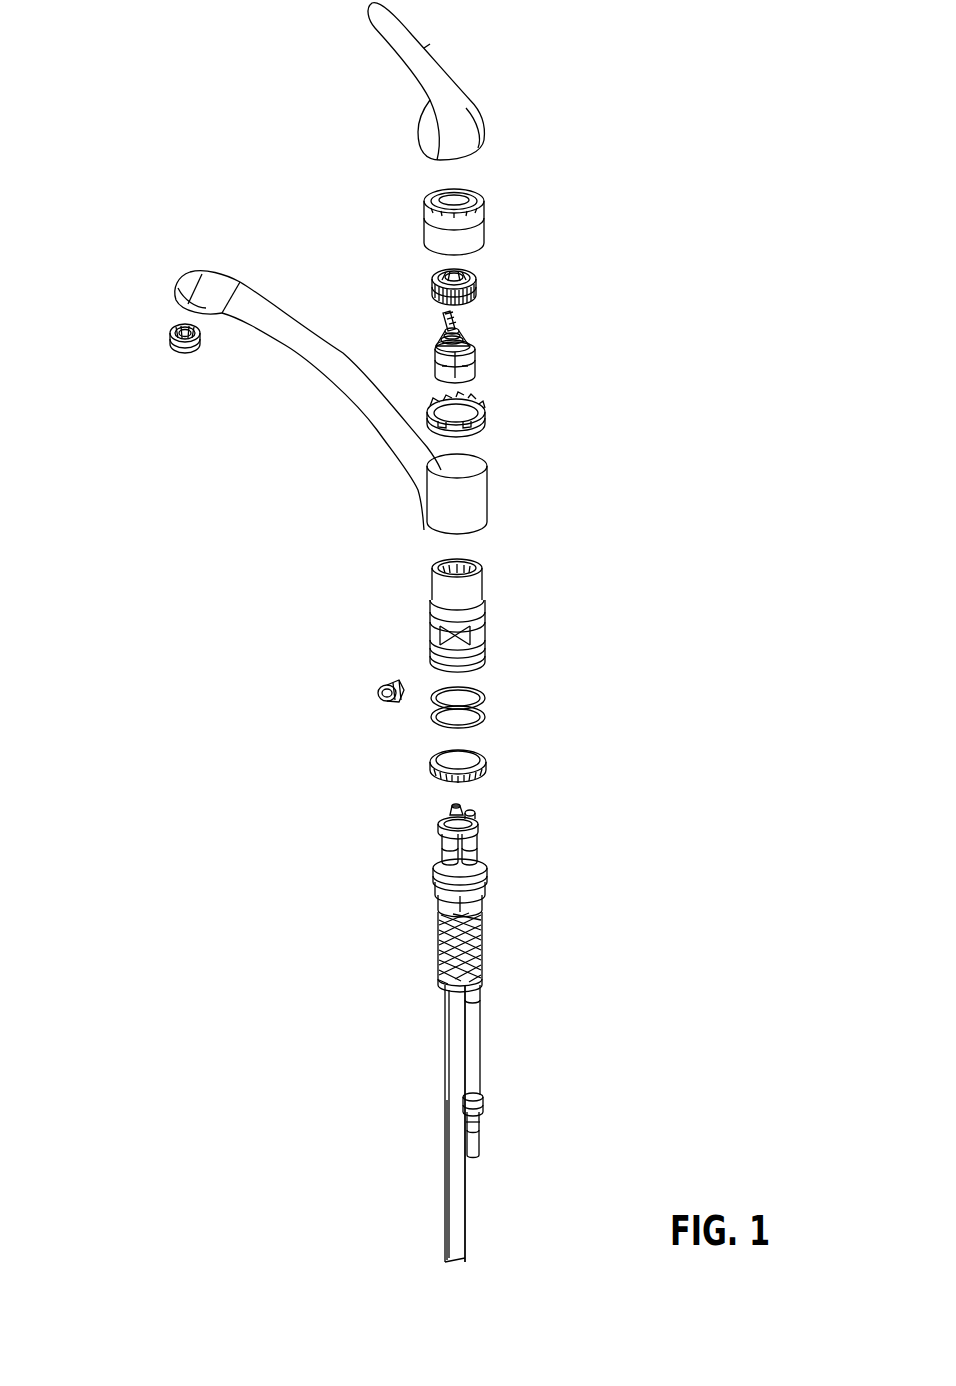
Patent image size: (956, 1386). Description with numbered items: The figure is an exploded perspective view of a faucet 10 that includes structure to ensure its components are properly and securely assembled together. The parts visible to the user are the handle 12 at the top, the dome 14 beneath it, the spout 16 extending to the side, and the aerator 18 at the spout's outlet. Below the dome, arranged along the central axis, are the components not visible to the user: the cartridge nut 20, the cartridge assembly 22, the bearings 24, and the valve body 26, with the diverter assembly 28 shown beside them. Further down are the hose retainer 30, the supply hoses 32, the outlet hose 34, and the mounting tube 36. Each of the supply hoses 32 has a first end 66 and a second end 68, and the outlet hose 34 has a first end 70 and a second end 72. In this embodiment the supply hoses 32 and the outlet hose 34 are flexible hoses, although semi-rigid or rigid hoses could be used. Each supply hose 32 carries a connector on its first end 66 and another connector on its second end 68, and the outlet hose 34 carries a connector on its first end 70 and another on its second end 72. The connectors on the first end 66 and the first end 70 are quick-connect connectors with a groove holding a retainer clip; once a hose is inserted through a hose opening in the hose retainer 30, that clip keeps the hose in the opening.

The faucet 10 is at (184, 129).
The handle 12 is at (468, 46).
The dome 14 is at (504, 203).
The spout 16 is at (512, 482).
The aerator 18 is at (219, 371).
The cartridge nut 20 is at (505, 264).
The cartridge assembly 22 is at (501, 336).
The bearings 24 is at (504, 394).
The valve body 26 is at (512, 574).
The diverter assembly 28 is at (366, 666).
The hose retainer 30 is at (465, 835).
The supply hoses 32 is at (467, 856).
The outlet hose 34 is at (500, 1042).
The mounting tube 36 is at (514, 890).
The first end 66 is at (456, 814).
The second end 68 is at (466, 1183).
The first end 70 is at (513, 840).
The second end 72 is at (517, 1106).